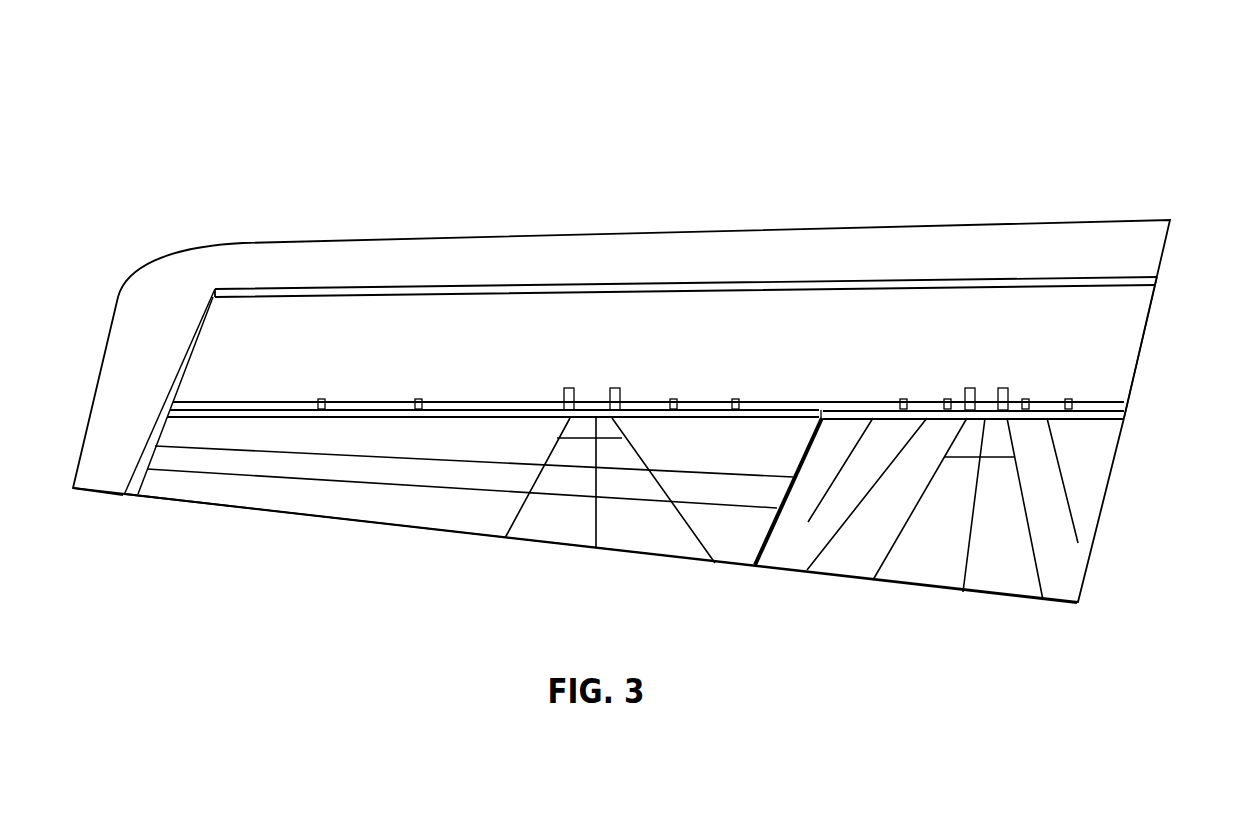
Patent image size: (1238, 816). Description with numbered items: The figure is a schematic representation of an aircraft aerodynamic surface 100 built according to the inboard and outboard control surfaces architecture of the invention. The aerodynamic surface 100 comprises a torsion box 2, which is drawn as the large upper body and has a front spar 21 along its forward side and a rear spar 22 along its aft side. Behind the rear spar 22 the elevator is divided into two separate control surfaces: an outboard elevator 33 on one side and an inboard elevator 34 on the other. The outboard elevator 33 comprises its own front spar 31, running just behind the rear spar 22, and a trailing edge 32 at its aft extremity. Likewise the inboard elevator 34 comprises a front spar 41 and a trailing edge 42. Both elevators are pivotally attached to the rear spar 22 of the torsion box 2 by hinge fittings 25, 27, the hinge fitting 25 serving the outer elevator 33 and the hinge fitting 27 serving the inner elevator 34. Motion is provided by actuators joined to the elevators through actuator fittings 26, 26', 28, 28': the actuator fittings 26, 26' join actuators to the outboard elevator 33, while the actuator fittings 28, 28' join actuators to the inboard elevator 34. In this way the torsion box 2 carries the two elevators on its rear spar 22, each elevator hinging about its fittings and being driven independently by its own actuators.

The aircraft aerodynamic surface 100 is at (321, 149).
The torsion box 2 is at (676, 333).
The front spar 21 is at (925, 282).
The rear spar 22 is at (872, 401).
The hinge fitting 25 is at (416, 399).
The actuator fitting 26 is at (484, 296).
The actuator fitting 26' is at (541, 287).
The hinge fitting 27 is at (1073, 403).
The actuator fitting 28 is at (980, 283).
The actuator fitting 28' is at (1033, 281).
The front spar 31 is at (273, 412).
The trailing edge 32 is at (298, 517).
The outboard elevator 33 is at (428, 550).
The inboard elevator 34 is at (915, 639).
The front spar 41 is at (1050, 412).
The trailing edge 42 is at (852, 580).